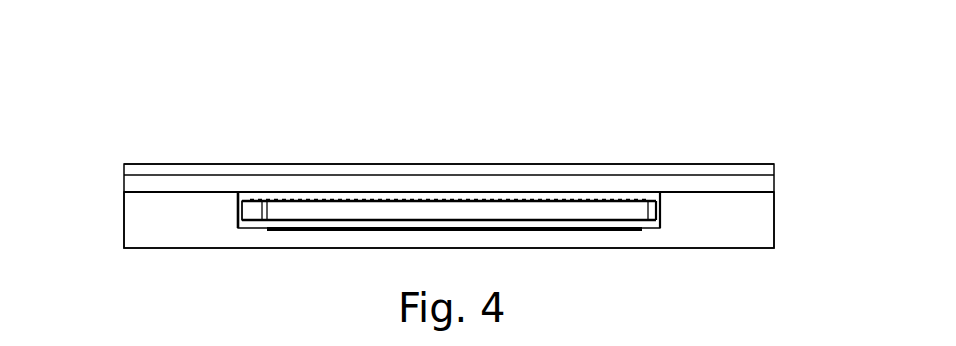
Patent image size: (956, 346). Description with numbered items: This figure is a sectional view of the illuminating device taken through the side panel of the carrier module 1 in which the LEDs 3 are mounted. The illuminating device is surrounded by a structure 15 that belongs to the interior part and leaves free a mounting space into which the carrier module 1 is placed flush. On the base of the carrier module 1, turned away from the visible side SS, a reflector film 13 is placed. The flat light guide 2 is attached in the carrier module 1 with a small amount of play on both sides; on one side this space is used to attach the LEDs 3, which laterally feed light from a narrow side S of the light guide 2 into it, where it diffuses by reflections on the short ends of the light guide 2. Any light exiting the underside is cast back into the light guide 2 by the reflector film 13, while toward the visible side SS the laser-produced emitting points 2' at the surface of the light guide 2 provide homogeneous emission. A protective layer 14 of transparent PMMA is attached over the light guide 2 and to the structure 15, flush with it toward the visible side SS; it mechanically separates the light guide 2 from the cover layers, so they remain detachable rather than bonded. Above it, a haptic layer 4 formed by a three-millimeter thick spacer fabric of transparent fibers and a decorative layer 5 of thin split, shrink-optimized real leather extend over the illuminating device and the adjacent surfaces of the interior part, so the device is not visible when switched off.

The narrow side S is at (425, 174).
The visible side SS is at (605, 152).
The carrier module 1 is at (232, 207).
The flat light guide 2 is at (449, 164).
The emitting points 2' is at (449, 153).
The LEDs 3 is at (258, 202).
The haptic layer 4 is at (667, 186).
The decorative layer 5 is at (629, 170).
The reflector film 13 is at (591, 234).
The protective layer 14 is at (302, 186).
The structure 15 is at (735, 206).